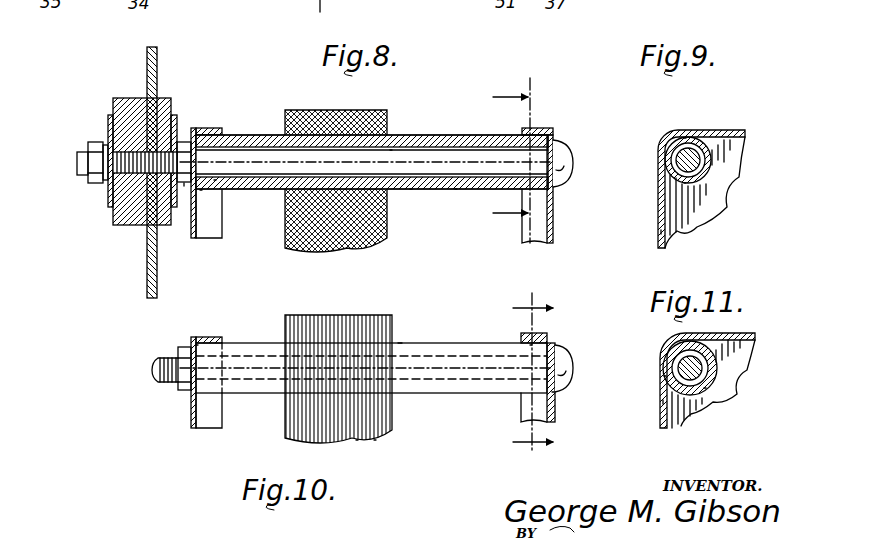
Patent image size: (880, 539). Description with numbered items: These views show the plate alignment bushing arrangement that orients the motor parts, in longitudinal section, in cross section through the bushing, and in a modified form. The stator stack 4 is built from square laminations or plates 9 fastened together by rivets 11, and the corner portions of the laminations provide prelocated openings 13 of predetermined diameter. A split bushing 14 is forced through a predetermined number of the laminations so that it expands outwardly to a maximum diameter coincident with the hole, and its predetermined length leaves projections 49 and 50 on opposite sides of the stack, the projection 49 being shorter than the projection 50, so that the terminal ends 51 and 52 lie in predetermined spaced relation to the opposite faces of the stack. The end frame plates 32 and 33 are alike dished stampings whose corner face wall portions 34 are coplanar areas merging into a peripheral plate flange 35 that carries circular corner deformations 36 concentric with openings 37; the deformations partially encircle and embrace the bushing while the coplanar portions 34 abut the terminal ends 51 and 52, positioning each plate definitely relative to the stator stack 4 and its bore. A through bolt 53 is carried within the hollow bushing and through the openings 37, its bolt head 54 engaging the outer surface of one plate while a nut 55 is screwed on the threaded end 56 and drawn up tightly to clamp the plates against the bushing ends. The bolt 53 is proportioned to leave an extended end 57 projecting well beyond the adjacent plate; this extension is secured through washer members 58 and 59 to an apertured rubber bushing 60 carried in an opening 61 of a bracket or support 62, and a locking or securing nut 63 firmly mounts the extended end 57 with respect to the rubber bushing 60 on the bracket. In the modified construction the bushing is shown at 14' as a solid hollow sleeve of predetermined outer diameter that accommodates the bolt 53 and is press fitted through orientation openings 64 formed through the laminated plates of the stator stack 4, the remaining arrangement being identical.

In FIG. 8, the stator stack 4 is at (308, 108).
In FIG. 10, the stator stack 4 is at (318, 314).
In FIG. 8, the laminations or plates 9 is at (356, 110).
In FIG. 10, the laminations or plates 9 is at (372, 438).
In FIG. 10, the rivets 11 is at (523, 373).
In FIG. 8, the openings 13 is at (390, 136).
In FIG. 8, the split bushing 14 is at (449, 219).
In FIG. 9, the split bushing 14 is at (655, 210).
In FIG. 10, the bushing 14' is at (371, 375).
In FIG. 11, the bushing 14' is at (739, 403).
In FIG. 8, the end frame plate 32 is at (212, 238).
In FIG. 10, the end frame plate 32 is at (206, 430).
In FIG. 8, the end frame plate 33 is at (536, 242).
In FIG. 9, the end frame plate 33 is at (734, 130).
In FIG. 10, the end frame plate 33 is at (538, 382).
In FIG. 11, the end frame plate 33 is at (680, 424).
In FIG. 9, the corner face wall portions 34 is at (718, 166).
In FIG. 11, the corner face wall portions 34 is at (694, 394).
In FIG. 8, the peripheral plate flange 35 is at (209, 131).
In FIG. 9, the peripheral plate flange 35 is at (662, 240).
In FIG. 10, the peripheral plate flange 35 is at (214, 338).
In FIG. 11, the peripheral plate flange 35 is at (660, 404).
In FIG. 8, the circular corner deformations 36 is at (208, 134).
In FIG. 9, the circular corner deformations 36 is at (668, 166).
In FIG. 10, the circular corner deformations 36 is at (196, 344).
In FIG. 11, the circular corner deformations 36 is at (672, 356).
In FIG. 8, the openings 37 is at (202, 190).
In FIG. 10, the openings 37 is at (552, 392).
In FIG. 8, the projection 49 is at (216, 180).
In FIG. 8, the projection 50 is at (412, 190).
In FIG. 8, the terminal end 51 is at (186, 142).
In FIG. 8, the terminal end 52 is at (550, 130).
In FIG. 8, the through bolt 53 is at (436, 150).
In FIG. 9, the through bolt 53 is at (698, 146).
In FIG. 10, the through bolt 53 is at (436, 380).
In FIG. 11, the through bolt 53 is at (715, 376).
In FIG. 8, the bolt head 54 is at (572, 154).
In FIG. 9, the bolt head 54 is at (684, 138).
In FIG. 10, the bolt head 54 is at (562, 361).
In FIG. 11, the bolt head 54 is at (664, 378).
In FIG. 8, the nut 55 is at (184, 184).
In FIG. 10, the nut 55 is at (184, 388).
In FIG. 8, the threaded end 56 is at (114, 201).
In FIG. 8, the extended end 57 is at (80, 164).
In FIG. 10, the extended end 57 is at (160, 382).
In FIG. 8, the washer member 58 is at (108, 126).
In FIG. 8, the washer member 59 is at (174, 110).
In FIG. 8, the rubber bushing 60 is at (124, 98).
In FIG. 8, the opening 61 is at (134, 220).
In FIG. 8, the bracket or support 62 is at (152, 48).
In FIG. 8, the locking or securing nut 63 is at (104, 176).
In FIG. 10, the orientation openings 64 is at (400, 342).